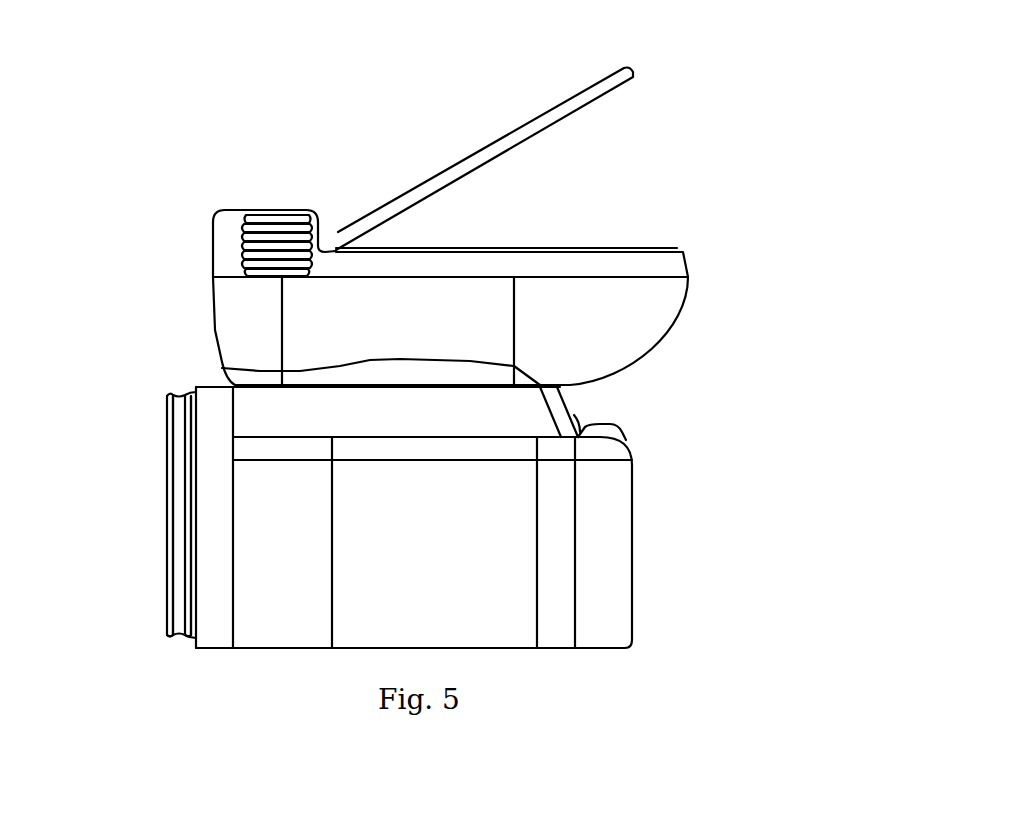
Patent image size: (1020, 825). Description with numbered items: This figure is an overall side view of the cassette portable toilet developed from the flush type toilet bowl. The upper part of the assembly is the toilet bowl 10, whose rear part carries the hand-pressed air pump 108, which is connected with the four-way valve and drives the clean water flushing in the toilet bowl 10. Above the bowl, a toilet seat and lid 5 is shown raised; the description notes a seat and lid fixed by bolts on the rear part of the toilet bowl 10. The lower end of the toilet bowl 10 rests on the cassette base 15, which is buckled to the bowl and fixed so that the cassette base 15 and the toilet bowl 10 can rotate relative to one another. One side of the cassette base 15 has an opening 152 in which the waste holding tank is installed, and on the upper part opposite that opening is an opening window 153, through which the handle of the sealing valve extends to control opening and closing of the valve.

The lid arm 5 is at (500, 150).
The hand-pressed air pump 108 is at (240, 242).
The toilet bowl 10 is at (587, 316).
The cassette base 15 is at (598, 547).
The opening window 153 is at (600, 435).
The opening 152 is at (182, 612).